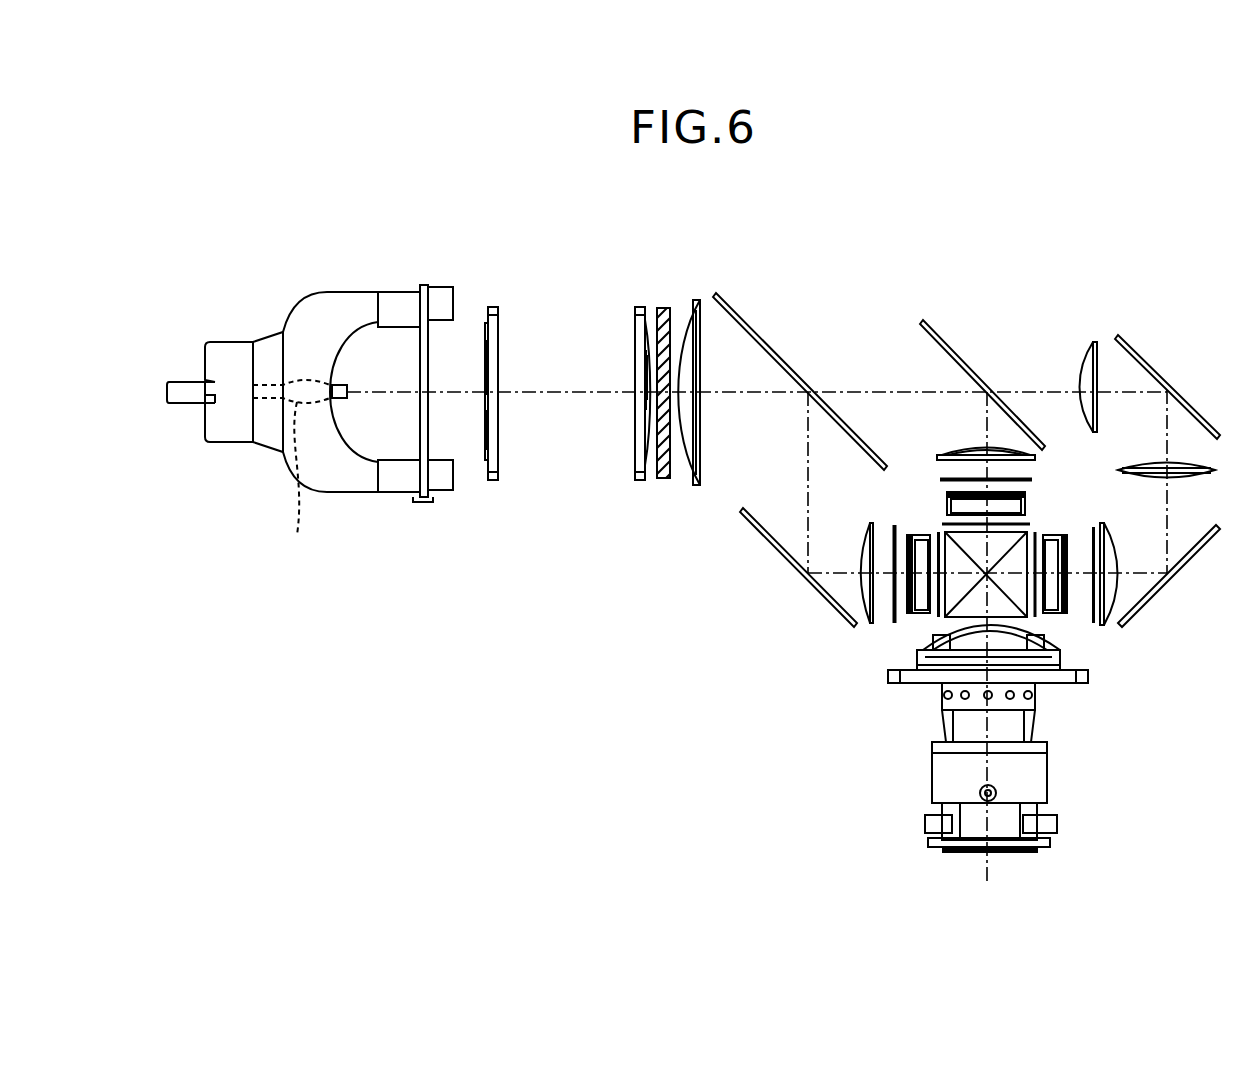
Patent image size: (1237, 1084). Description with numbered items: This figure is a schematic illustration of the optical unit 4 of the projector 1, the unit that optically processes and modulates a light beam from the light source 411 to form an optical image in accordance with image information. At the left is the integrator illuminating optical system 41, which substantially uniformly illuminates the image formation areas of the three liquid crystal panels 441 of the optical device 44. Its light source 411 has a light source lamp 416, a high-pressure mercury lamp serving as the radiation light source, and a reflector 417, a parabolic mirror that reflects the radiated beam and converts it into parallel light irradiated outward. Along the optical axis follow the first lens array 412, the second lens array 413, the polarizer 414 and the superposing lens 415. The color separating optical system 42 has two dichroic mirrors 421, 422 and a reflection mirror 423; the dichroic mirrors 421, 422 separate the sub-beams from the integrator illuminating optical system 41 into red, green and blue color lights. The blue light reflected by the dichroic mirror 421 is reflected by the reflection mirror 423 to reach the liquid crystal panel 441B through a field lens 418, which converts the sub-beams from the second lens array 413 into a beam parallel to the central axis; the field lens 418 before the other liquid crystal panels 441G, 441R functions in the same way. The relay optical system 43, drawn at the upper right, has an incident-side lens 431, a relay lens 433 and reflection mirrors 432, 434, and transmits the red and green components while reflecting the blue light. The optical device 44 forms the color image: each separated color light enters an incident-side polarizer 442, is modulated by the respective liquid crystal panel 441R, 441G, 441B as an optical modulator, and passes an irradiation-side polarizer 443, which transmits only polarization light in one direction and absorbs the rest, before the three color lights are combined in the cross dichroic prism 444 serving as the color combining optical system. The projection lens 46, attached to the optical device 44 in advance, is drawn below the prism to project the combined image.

The projector 1 is at (1127, 242).
The optical unit 4 is at (1067, 280).
The integrator illuminating optical system 41 is at (382, 267).
The color separating optical system 42 is at (742, 247).
The relay optical system 43 is at (1147, 322).
The optical device 44 is at (895, 625).
The projection lens 46 is at (1027, 782).
The light source 411 is at (387, 562).
The first lens array 412 is at (497, 480).
The second lens array 413 is at (642, 480).
The polarizer 414 is at (670, 480).
The superposing lens 415 is at (697, 485).
The light source lamp 416 is at (300, 474).
The reflector 417 is at (360, 480).
The field lens 418 is at (1033, 457).
The dichroic mirror 421 is at (748, 322).
The dichroic mirror 422 is at (935, 333).
The reflection mirror 423 is at (773, 548).
The incident-side lens 431 is at (1087, 357).
The reflection mirror 432 is at (1163, 378).
The relay lens 433 is at (1187, 480).
The reflection mirror 434 is at (1193, 557).
The liquid crystal panel 441 is at (1006, 598).
The liquid crystal panel for green 441G is at (1008, 508).
The liquid crystal panel for blue 441B is at (913, 622).
The liquid crystal panel for red 441R is at (1052, 617).
The incident-side polarizer 442 is at (942, 479).
The irradiation-side polarizer 443 is at (1033, 527).
The cross dichroic prism 444 is at (1062, 665).